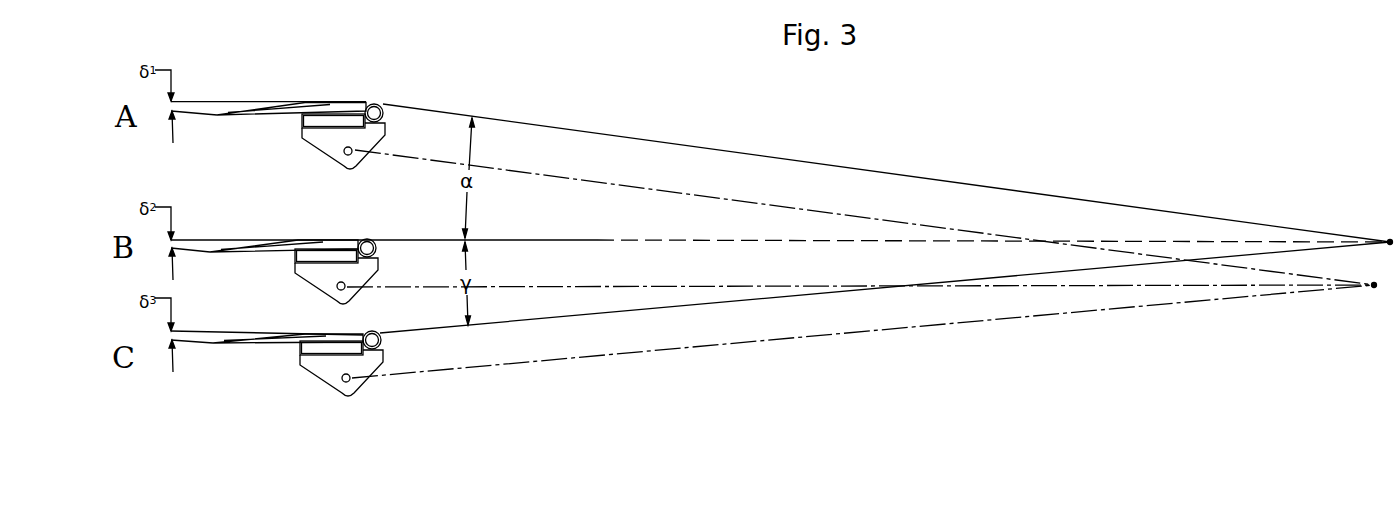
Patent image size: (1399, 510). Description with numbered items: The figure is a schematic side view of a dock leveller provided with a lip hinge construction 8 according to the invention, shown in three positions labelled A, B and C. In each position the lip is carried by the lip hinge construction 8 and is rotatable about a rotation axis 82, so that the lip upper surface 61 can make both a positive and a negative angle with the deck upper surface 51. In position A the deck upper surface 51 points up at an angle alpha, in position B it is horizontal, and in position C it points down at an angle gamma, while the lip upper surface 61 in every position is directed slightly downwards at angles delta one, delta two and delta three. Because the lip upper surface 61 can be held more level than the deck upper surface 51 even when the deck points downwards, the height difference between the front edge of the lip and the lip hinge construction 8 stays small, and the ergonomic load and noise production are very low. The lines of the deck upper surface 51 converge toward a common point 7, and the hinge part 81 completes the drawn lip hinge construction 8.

The pivot point / axis of the web 7 is at (1388, 238).
The lip hinge construction 8 is at (322, 270).
The deck upper surface 51 is at (652, 137).
The lip upper surface 61 is at (283, 100).
The holder support plate 81 is at (323, 142).
The rotation axis 82 is at (378, 105).